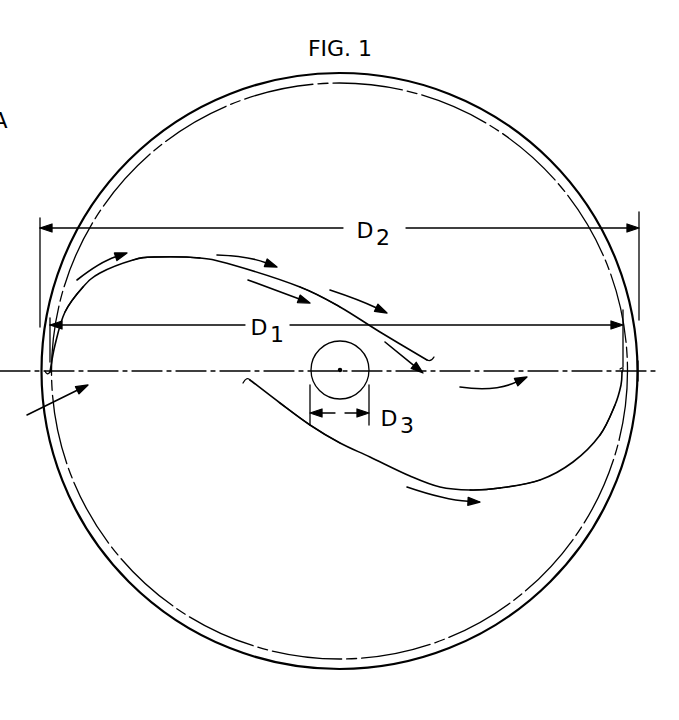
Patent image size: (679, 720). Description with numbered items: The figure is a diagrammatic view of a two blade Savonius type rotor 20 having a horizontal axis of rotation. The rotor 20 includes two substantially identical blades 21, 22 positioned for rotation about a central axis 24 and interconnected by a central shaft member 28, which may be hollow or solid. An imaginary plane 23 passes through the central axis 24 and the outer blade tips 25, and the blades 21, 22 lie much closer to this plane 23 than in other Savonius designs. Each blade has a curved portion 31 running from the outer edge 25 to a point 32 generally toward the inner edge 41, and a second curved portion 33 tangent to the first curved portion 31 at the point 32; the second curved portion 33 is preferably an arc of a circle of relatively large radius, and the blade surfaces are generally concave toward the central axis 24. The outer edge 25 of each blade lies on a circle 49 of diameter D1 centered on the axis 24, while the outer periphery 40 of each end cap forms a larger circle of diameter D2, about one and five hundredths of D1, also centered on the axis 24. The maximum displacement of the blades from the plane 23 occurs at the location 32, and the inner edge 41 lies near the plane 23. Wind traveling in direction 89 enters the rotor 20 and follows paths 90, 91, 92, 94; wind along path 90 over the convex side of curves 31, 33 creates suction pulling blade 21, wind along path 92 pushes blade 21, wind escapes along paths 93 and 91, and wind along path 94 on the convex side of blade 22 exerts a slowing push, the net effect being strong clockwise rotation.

The two blade Savonius type rotor 20 is at (103, 618).
The blade 21 is at (190, 262).
The blade 22 is at (370, 457).
The imaginary plane 23 is at (152, 372).
The central axis 24 is at (340, 370).
The outer blade tip 25 is at (46, 371).
The central shaft member 28 is at (313, 359).
The curved portion 31 is at (72, 296).
The point 32 is at (160, 256).
The second curved portion 33 is at (314, 290).
The outer periphery of end cap 40 is at (492, 116).
The inner edge 41 is at (427, 360).
The circle 49 is at (208, 116).
The wind direction 89 is at (35, 417).
The wind path 90 is at (92, 270).
The wind path 91 is at (483, 390).
The wind path 92 is at (262, 287).
The wind path 93 is at (386, 348).
The wind path 94 is at (440, 497).